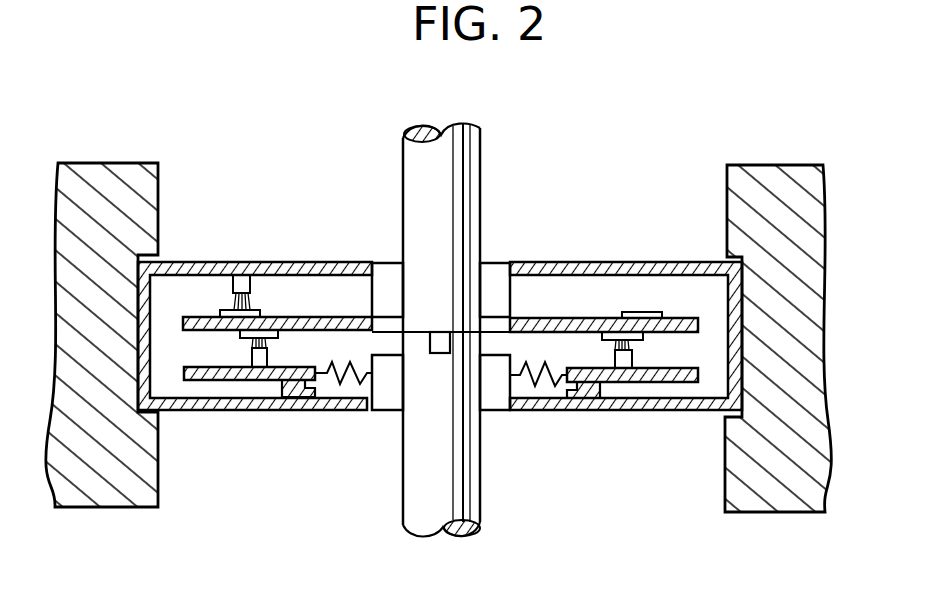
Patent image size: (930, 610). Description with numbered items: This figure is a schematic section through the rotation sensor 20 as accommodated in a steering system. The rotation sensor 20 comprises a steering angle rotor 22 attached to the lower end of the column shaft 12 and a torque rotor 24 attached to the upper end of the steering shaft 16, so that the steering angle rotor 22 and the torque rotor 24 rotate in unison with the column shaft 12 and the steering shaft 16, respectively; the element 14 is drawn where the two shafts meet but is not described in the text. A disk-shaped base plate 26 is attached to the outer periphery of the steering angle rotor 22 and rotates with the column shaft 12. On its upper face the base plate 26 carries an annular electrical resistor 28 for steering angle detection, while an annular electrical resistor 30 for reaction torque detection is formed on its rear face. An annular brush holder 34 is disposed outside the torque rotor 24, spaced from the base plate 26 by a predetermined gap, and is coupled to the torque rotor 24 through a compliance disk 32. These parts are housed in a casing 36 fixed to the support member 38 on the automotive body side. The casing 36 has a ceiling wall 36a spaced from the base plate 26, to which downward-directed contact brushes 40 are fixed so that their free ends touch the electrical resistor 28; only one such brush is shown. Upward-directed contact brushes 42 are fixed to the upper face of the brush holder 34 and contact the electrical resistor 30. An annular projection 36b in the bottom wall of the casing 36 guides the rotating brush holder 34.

The column shaft 12 is at (420, 158).
The key 14 is at (438, 343).
The steering shaft 16 is at (420, 493).
The rotation sensor 20 is at (608, 166).
The steering angle rotor 22 is at (388, 273).
The torque rotor 24 is at (385, 393).
The base plate 26 is at (320, 325).
The electrical resistor 28 is at (222, 310).
The electrical resistor 30 is at (237, 334).
The compliance disk 32 is at (340, 388).
The brush holder 34 is at (275, 385).
The casing 36 is at (440, 341).
The ceiling wall 36a is at (287, 262).
The annular projection 36b is at (308, 412).
The support member 38 is at (112, 482).
The contact brush 40 is at (262, 262).
The contact brush 42 is at (250, 362).